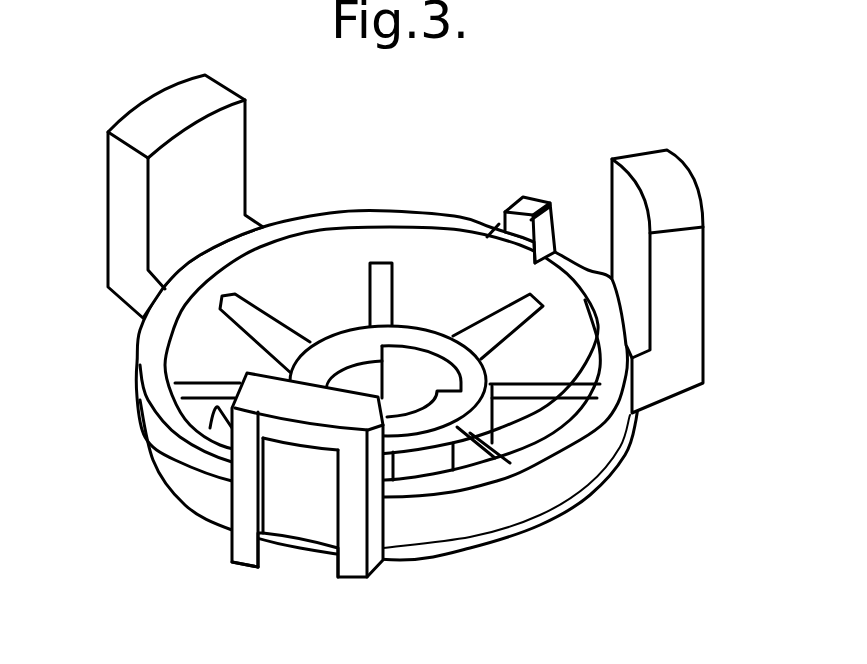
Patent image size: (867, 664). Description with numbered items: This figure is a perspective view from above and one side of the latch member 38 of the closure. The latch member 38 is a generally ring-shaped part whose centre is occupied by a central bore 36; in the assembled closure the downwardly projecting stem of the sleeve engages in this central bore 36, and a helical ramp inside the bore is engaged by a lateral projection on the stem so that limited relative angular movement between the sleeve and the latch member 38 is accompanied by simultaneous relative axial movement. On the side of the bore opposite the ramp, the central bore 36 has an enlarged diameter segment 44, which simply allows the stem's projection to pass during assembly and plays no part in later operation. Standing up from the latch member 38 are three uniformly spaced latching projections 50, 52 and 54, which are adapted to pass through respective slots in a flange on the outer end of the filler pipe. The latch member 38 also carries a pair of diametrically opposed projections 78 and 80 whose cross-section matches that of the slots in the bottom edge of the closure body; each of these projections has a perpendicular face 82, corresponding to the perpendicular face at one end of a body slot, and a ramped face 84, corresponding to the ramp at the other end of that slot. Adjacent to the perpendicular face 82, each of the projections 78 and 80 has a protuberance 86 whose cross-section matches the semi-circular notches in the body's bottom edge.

The central bore 36 is at (352, 377).
The latch member 38 is at (122, 429).
The enlarged diameter segment 44 is at (408, 360).
The latching projection 50 is at (142, 130).
The latching projection 52 is at (667, 185).
The latching projection 54 is at (267, 428).
The projection 78 is at (220, 437).
The projection 80 is at (523, 205).
The perpendicular face 82 is at (548, 235).
The ramped face 84 is at (500, 212).
The protuberance 86 is at (543, 210).